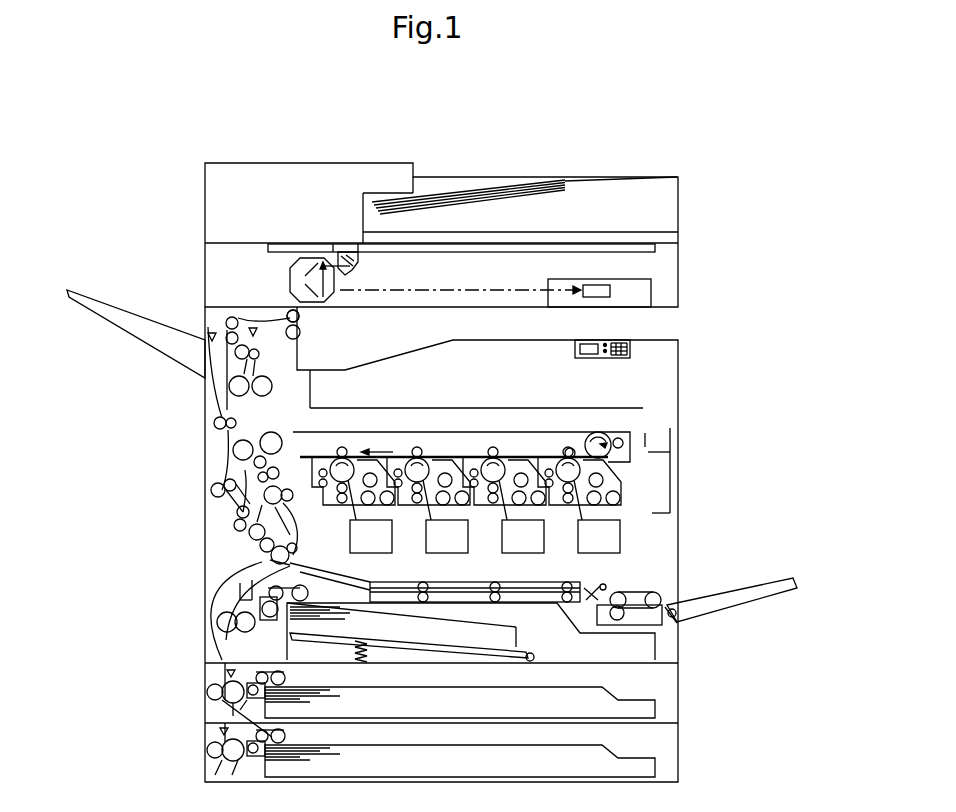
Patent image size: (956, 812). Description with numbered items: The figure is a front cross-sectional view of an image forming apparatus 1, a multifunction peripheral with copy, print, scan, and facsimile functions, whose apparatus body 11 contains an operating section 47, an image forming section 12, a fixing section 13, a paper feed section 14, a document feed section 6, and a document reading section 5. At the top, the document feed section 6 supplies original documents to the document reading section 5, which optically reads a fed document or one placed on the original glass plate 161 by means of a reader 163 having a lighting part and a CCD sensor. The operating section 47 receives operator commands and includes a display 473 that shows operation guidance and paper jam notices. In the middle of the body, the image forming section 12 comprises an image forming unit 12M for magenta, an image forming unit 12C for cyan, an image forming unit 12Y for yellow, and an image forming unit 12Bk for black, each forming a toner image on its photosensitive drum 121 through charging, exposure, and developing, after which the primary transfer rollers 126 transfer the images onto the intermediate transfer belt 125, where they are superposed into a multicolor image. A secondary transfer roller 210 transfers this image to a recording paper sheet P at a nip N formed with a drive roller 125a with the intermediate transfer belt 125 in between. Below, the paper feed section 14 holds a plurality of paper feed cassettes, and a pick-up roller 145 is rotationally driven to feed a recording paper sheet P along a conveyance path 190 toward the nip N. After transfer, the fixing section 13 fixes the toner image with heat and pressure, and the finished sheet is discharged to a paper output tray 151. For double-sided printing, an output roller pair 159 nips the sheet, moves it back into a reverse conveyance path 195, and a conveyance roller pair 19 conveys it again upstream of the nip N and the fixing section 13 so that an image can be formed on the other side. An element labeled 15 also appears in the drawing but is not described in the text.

The image forming apparatus 1 is at (744, 226).
The document reading section 5 is at (183, 268).
The document feed section 6 is at (547, 164).
The apparatus body 11 is at (687, 360).
The image forming section 12 is at (652, 459).
The image forming unit for black 12Bk is at (354, 446).
The image forming unit for yellow 12Y is at (427, 444).
The image forming unit for cyan 12C is at (504, 444).
The image forming unit for magenta 12M is at (573, 441).
The fixing section 13 is at (218, 387).
The paper feed section 14 is at (657, 688).
The operation panel 15 is at (637, 333).
The conveyance roller pair 19 is at (296, 534).
The operating section 47 is at (633, 353).
The photosensitive drum 121 is at (573, 481).
The intermediate transfer belt 125 is at (587, 432).
The drive roller 125a is at (285, 419).
The primary transfer roller 126 is at (567, 447).
The pick-up roller 145 is at (256, 730).
The paper output tray 151 is at (332, 370).
The output roller pair 159 is at (300, 318).
The original glass plate 161 is at (565, 250).
The reader 163 is at (298, 284).
The conveyance path 190 is at (236, 455).
The reverse conveyance path 195 is at (240, 442).
The secondary transfer roller 210 is at (228, 470).
The display 473 is at (585, 345).
The nip N is at (251, 429).
The recording paper sheet P is at (510, 622).